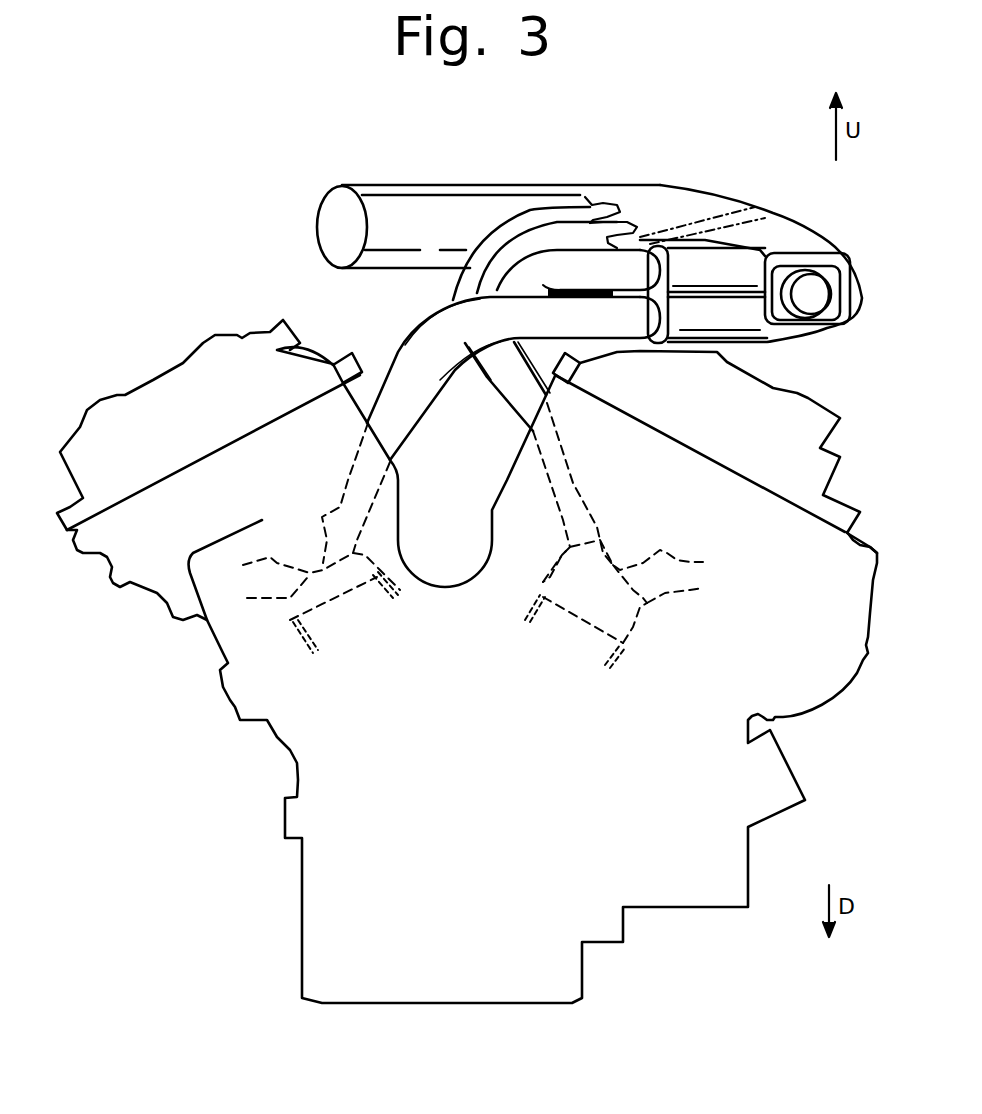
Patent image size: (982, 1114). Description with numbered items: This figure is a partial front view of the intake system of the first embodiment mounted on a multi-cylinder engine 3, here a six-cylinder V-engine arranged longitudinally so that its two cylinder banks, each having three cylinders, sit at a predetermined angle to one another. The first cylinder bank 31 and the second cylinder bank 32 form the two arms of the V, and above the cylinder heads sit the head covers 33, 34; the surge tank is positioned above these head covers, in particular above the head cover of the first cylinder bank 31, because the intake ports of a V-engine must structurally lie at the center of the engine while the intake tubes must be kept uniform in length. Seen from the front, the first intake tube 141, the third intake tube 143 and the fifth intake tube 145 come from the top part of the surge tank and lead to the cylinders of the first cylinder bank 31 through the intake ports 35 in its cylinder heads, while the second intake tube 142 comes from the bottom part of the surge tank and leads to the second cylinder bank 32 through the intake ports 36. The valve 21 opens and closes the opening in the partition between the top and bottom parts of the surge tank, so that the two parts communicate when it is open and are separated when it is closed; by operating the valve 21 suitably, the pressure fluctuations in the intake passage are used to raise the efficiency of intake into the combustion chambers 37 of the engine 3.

The engine 3 is at (298, 955).
The valve 21 is at (845, 296).
The first cylinder bank 31 is at (633, 628).
The second cylinder bank 32 is at (297, 622).
The head cover 33 is at (820, 468).
The head cover 34 is at (80, 445).
The intake port 35 is at (553, 462).
The intake port 36 is at (357, 487).
The combustion chamber 37 is at (402, 593).
The first intake tube 141 is at (512, 383).
The second intake tube 142 is at (400, 366).
The third intake tube 143 is at (513, 255).
The fifth intake tube 145 is at (563, 215).